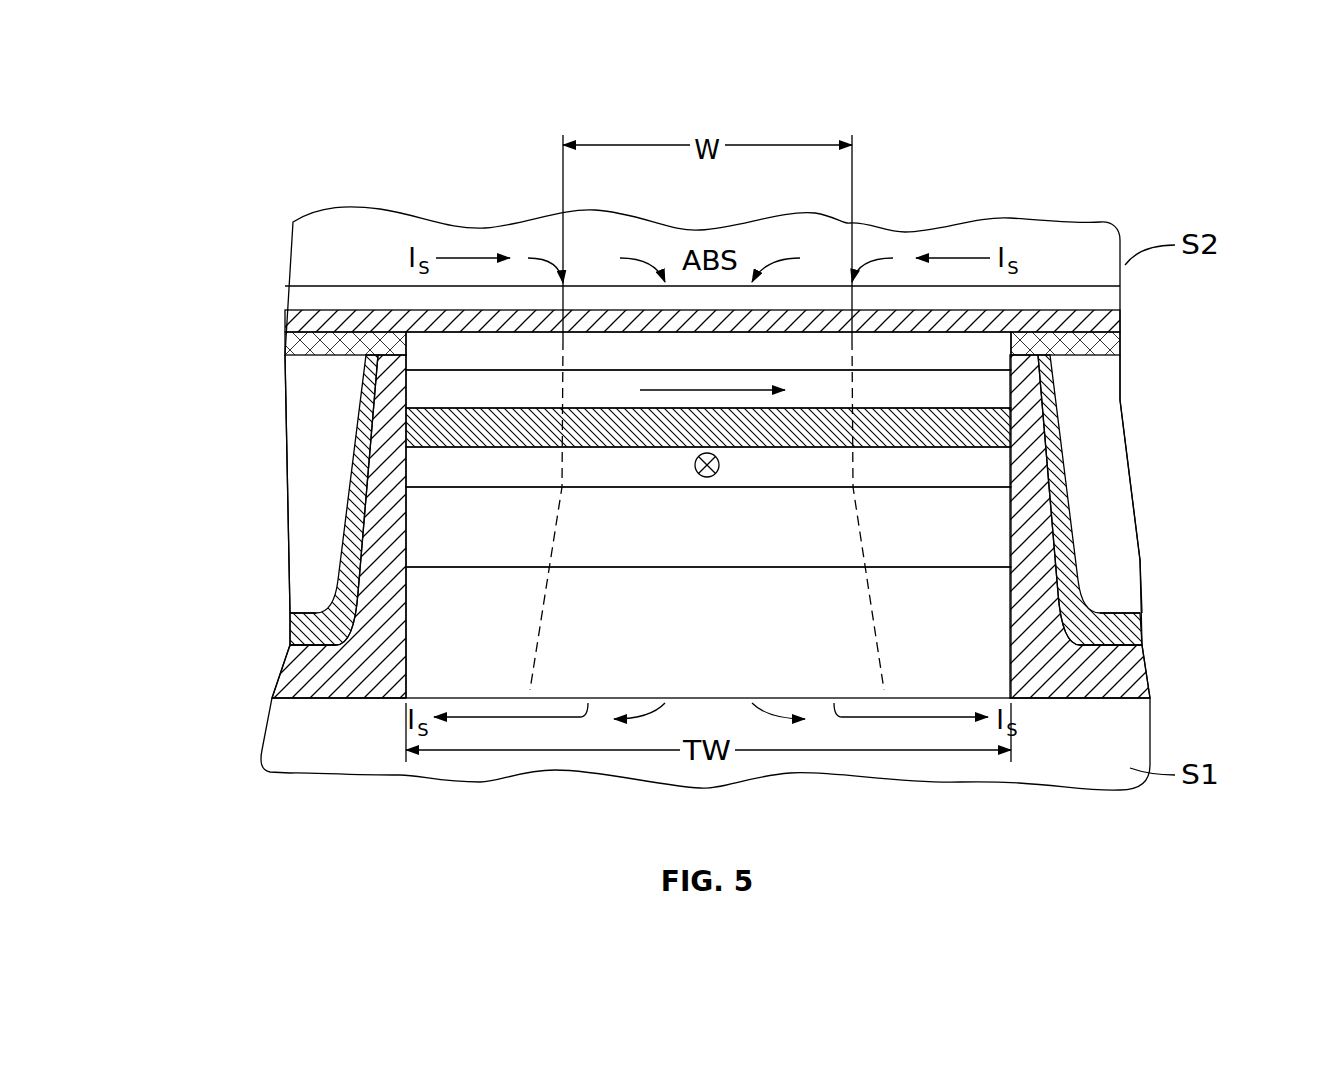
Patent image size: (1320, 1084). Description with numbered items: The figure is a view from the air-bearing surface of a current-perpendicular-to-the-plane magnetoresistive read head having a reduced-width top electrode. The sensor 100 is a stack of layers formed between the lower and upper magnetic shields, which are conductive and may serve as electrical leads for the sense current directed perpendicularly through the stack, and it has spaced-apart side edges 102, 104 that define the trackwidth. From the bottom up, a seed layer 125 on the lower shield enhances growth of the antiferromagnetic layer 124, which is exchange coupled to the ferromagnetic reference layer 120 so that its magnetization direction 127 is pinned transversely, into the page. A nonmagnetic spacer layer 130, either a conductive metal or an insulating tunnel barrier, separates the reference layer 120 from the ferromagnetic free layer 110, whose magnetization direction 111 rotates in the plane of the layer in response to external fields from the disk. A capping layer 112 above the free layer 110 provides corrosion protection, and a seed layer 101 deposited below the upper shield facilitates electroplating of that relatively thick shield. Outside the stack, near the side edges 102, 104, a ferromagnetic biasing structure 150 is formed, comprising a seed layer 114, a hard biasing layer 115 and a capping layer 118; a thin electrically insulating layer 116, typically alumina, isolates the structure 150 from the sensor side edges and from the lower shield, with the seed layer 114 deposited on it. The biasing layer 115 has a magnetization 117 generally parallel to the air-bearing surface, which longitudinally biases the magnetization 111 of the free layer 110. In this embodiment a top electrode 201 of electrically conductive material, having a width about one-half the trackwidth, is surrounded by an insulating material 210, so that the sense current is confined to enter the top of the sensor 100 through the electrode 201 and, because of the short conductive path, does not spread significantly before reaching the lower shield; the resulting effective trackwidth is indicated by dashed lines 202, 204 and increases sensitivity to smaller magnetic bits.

The sensor 100 is at (523, 333).
The seed layer 101 is at (1025, 295).
The side edge 102 is at (395, 690).
The side edge 104 is at (1015, 685).
The free layer 110 is at (930, 401).
The magnetization direction 111 is at (688, 373).
The capping layer 112 is at (930, 363).
The seed layer 114 is at (305, 630).
The biasing layer 115 is at (295, 522).
The insulating layer 116 is at (300, 675).
The magnetization 117 is at (307, 455).
The capping layer 118 is at (295, 343).
The reference layer 120 is at (930, 480).
The antiferromagnetic layer 124 is at (930, 536).
The seed layer 125 is at (930, 643).
The magnetization direction 127 is at (720, 465).
The nonmagnetic spacer layer 130 is at (930, 441).
The ferromagnetic biasing structure 150 is at (190, 335).
The top electrode 201 is at (792, 320).
The dashed line 202 is at (560, 510).
The dashed line 204 is at (862, 550).
The insulating material 210 is at (290, 320).